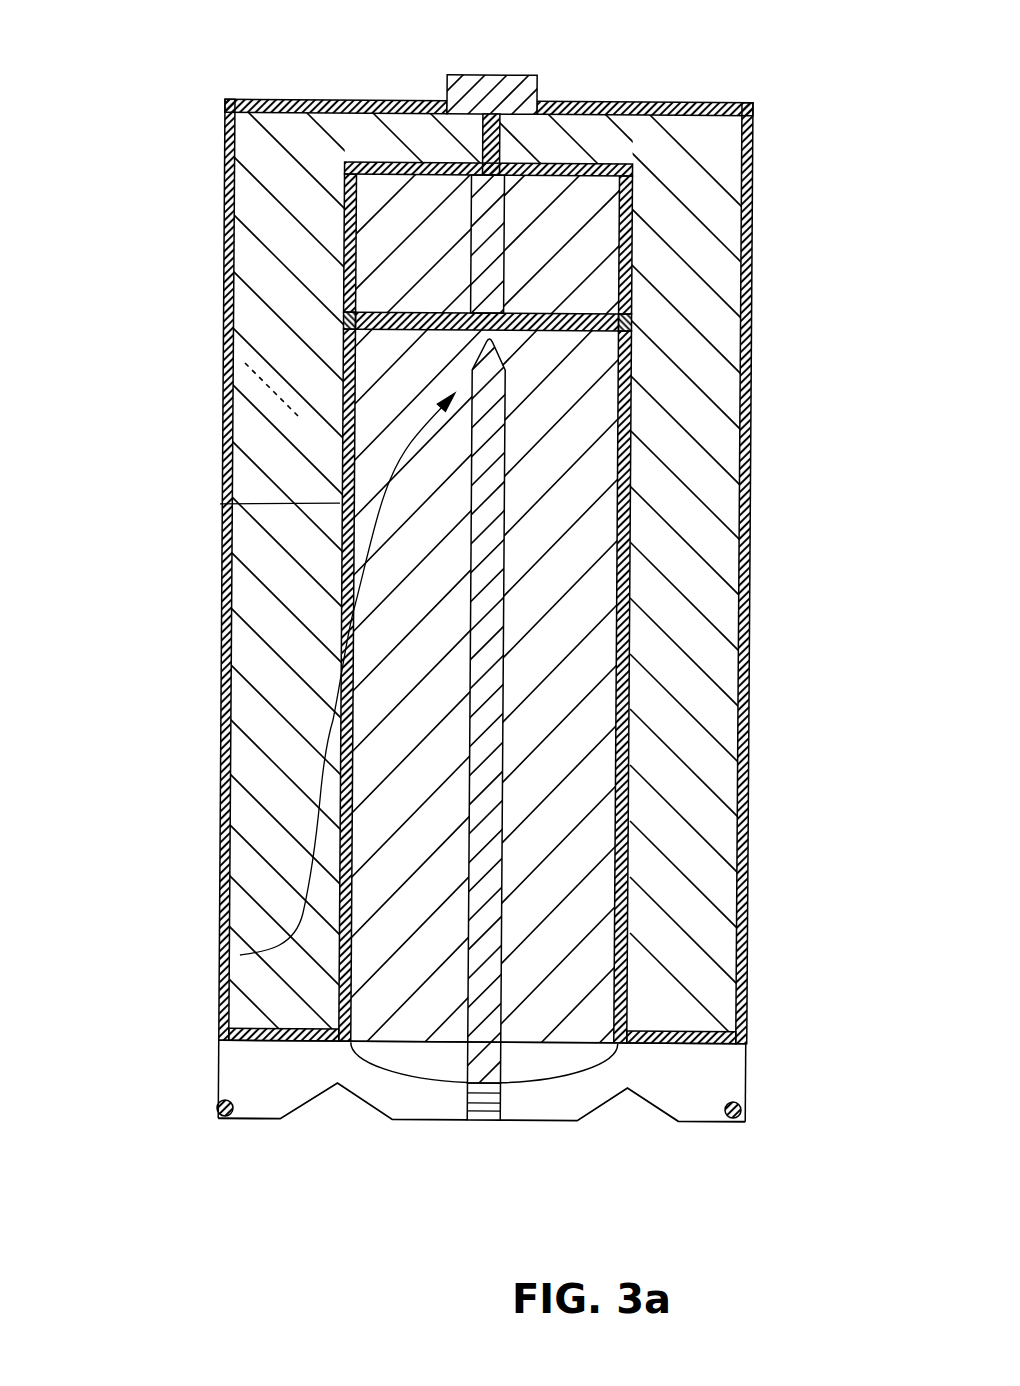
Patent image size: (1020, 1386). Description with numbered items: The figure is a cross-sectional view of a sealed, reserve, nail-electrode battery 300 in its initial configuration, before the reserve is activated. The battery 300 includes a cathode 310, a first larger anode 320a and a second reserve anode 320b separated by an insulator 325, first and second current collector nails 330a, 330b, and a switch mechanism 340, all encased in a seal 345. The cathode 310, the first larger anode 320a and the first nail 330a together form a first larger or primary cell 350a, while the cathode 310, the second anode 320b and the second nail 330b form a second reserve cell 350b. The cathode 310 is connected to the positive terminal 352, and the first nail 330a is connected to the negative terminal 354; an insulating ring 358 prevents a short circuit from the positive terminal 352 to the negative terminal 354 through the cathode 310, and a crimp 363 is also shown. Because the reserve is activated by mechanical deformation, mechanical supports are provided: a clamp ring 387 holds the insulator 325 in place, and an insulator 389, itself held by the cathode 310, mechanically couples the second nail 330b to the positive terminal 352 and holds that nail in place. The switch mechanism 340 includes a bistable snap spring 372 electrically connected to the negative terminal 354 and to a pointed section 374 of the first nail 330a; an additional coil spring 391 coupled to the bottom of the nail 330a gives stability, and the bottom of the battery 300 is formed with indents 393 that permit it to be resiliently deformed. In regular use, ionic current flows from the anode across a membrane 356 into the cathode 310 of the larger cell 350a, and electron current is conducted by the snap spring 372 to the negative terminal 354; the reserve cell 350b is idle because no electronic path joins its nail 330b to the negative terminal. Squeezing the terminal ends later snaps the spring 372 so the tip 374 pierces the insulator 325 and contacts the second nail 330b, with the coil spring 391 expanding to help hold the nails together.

The sealed reserve nail-electrode battery 300 is at (280, 78).
The cathode 310 is at (253, 142).
The seal 345 is at (747, 113).
The insulating ring 358 is at (726, 1043).
The second reserve cell 350b is at (200, 216).
The positive terminal 352 is at (493, 75).
The insulator 389 is at (500, 150).
The second current collector nail 330b is at (508, 252).
The second reserve anode 320b is at (608, 197).
The insulator 325 is at (571, 309).
The clamp ring 387 is at (334, 318).
The first larger primary cell 350a is at (165, 682).
The first current collector nail 330a is at (510, 563).
The pointed section 374 is at (479, 362).
The coil spring 391 is at (489, 1120).
The first larger anode 320a is at (602, 481).
The membrane 356 is at (223, 506).
The switch mechanism 340 is at (380, 986).
The bistable snap spring 372 is at (598, 1061).
The negative terminal 354 is at (439, 1122).
The indents 393 is at (367, 1099).
The crimp 363 is at (225, 1119).